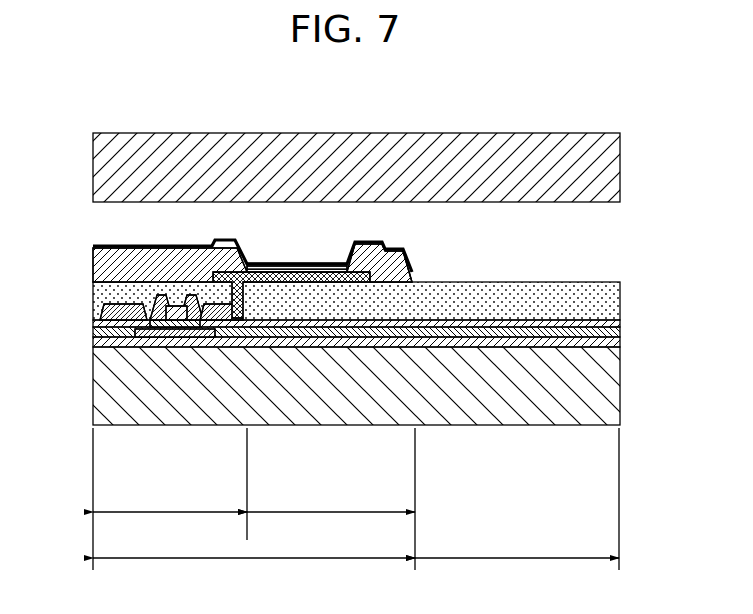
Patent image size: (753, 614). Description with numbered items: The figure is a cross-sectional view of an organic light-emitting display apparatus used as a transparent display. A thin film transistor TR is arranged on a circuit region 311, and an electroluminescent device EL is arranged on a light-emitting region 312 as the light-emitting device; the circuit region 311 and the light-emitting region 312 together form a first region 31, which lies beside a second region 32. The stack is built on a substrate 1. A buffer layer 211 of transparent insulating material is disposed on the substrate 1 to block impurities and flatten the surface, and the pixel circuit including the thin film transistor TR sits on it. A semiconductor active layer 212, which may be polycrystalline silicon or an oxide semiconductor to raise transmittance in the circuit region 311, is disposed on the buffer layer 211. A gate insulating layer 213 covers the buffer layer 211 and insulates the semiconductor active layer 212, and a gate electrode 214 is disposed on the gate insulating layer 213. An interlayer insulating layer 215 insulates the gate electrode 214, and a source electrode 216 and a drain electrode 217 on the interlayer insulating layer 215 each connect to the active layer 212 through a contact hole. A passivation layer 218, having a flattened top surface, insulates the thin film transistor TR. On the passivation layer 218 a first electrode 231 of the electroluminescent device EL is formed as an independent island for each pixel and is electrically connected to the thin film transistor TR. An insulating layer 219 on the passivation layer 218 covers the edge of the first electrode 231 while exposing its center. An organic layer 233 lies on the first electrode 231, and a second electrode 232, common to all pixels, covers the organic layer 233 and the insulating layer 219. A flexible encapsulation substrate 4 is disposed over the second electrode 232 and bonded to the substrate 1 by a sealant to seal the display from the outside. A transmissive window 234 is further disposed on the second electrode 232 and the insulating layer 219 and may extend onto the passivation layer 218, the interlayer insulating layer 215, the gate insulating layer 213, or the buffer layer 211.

The substrate 1 is at (620, 385).
The flexible encapsulation substrate 4 is at (620, 165).
The buffer layer 211 is at (620, 345).
The semiconductor active layer 212 is at (170, 337).
The gate insulating layer 213 is at (620, 333).
The gate electrode 214 is at (185, 327).
The interlayer insulating layer 215 is at (620, 323).
The source electrode 216 is at (128, 299).
The drain electrode 217 is at (192, 288).
The passivation layer 218 is at (622, 298).
The insulating layer 219 is at (100, 268).
The first electrode 231 is at (265, 268).
The second electrode 232 is at (93, 246).
The organic layer 233 is at (276, 266).
The transmissive window 234 is at (413, 265).
The electroluminescent device EL is at (305, 253).
The thin film transistor TR is at (94, 307).
The first region 31 is at (254, 570).
The circuit region 311 is at (170, 524).
The light-emitting region 312 is at (331, 524).
The second region 32 is at (517, 570).